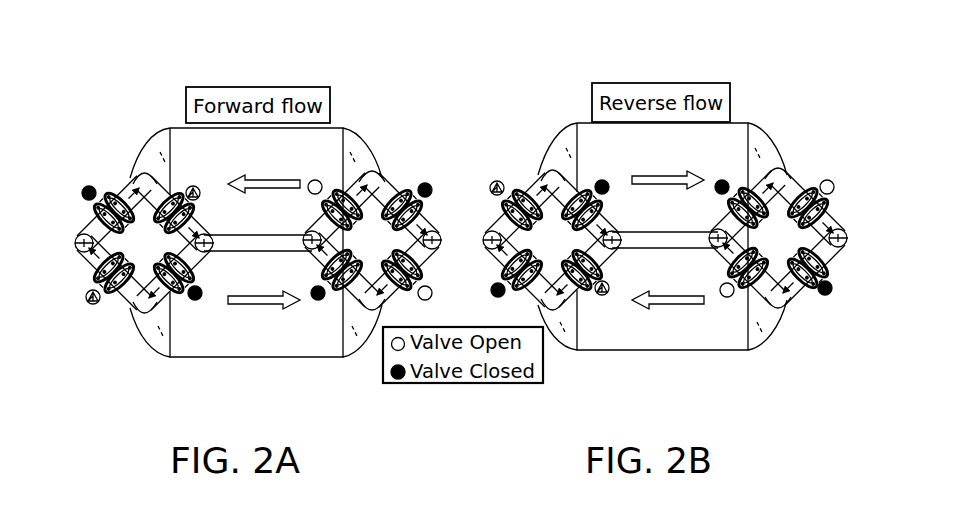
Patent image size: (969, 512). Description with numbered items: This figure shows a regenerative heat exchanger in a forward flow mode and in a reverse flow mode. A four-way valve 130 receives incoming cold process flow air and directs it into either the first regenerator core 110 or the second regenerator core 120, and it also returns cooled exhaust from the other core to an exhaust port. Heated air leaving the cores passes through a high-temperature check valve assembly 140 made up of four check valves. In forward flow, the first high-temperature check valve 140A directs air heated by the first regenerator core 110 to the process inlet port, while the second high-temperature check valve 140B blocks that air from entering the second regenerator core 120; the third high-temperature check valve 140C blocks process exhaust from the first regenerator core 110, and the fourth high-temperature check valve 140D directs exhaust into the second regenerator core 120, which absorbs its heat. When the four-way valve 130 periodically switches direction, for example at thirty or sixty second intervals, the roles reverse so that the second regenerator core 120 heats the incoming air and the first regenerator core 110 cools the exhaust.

In FIG. 2A, the first regenerator core 110 is at (339, 119).
In FIG. 2B, the first regenerator core 110 is at (746, 117).
In FIG. 2A, the second regenerator core 120 is at (334, 362).
In FIG. 2B, the second regenerator core 120 is at (749, 355).
In FIG. 2A, the four-way valve 130 is at (396, 184).
In FIG. 2B, the four-way valve 130 is at (846, 224).
In FIG. 2A, the high-temperature check valve assembly 140 is at (126, 235).
In FIG. 2B, the high-temperature check valve assembly 140 is at (544, 218).
In FIG. 2A, the first high-temperature check valve 140A is at (136, 172).
In FIG. 2B, the first high-temperature check valve 140A is at (580, 125).
In FIG. 2A, the second high-temperature check valve 140B is at (178, 342).
In FIG. 2B, the second high-temperature check valve 140B is at (582, 292).
In FIG. 2A, the third high-temperature check valve 140C is at (104, 183).
In FIG. 2B, the third high-temperature check valve 140C is at (553, 190).
In FIG. 2A, the fourth high-temperature check valve 140D is at (118, 305).
In FIG. 2B, the fourth high-temperature check valve 140D is at (527, 282).